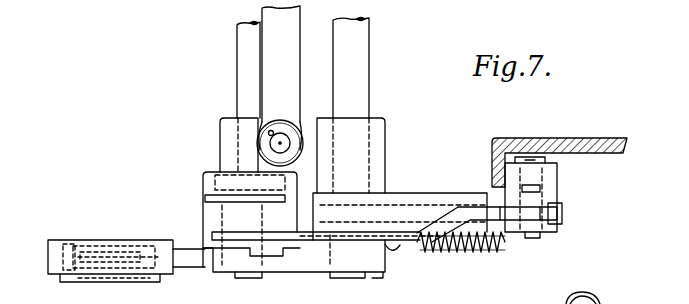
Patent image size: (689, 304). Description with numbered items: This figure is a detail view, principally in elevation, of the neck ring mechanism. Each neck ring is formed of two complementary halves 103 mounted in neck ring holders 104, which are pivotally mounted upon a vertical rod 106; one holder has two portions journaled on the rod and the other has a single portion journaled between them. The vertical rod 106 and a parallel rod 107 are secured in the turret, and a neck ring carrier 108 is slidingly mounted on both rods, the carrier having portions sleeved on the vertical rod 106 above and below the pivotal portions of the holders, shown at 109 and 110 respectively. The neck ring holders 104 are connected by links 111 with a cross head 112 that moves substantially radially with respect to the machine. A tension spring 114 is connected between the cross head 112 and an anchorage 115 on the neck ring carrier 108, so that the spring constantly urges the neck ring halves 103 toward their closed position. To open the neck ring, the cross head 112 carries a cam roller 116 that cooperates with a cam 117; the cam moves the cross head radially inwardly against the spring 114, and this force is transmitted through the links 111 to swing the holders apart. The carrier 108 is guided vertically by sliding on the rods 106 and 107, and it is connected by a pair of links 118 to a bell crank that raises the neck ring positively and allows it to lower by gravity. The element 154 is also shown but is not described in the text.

The neck ring halves 103 is at (85, 240).
The neck ring holders 104 is at (130, 252).
The vertical rod 106 is at (244, 62).
The rod 107 is at (357, 61).
The neck ring carrier 108 is at (385, 153).
The upper sleeved portion of carrier 109 is at (225, 140).
The lower sleeved portion of carrier 110 is at (272, 272).
The links 111 is at (372, 276).
The cross head 112 is at (548, 230).
The tension spring 114 is at (478, 253).
The anchorage 115 is at (392, 250).
The cam roller 116 is at (555, 180).
The cam 117 is at (492, 148).
The links 118 is at (300, 19).
The roller 154 is at (600, 300).